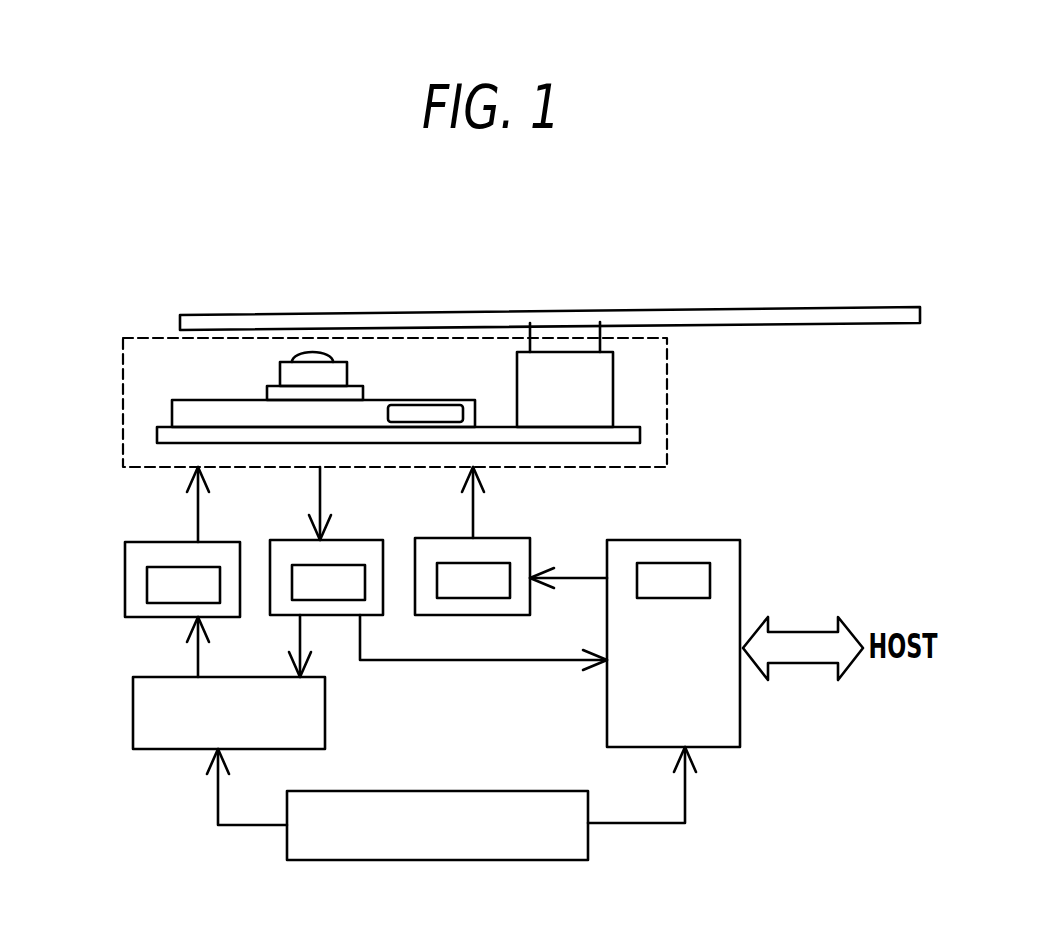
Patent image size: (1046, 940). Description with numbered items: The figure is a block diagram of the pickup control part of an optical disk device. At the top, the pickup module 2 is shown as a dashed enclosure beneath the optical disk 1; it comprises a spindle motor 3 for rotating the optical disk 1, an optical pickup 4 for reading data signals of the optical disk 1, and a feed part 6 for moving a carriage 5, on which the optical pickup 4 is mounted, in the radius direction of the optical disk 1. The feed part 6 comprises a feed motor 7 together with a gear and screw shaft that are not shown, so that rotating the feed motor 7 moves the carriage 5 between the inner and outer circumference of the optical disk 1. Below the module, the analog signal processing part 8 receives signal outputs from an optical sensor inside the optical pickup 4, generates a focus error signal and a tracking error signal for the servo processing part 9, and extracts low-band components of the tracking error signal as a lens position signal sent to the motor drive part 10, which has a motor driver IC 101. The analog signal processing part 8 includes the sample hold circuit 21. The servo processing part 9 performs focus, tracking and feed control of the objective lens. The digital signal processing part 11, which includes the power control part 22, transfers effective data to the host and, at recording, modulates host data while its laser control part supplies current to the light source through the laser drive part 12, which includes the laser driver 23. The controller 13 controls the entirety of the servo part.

The optical disk 1 is at (505, 310).
The pickup module 2 is at (152, 350).
The spindle motor 3 is at (602, 382).
The optical pickup 4 is at (313, 353).
The carriage 5 is at (288, 390).
The feed part 6 is at (182, 418).
The feed motor 7 is at (410, 413).
The analog signal processing part 8 is at (340, 603).
The servo processing part 9 is at (168, 750).
The motor drive part 10 is at (154, 545).
The motor driver IC 101 is at (148, 585).
The digital signal processing part 11 is at (711, 602).
The laser drive part 12 is at (506, 564).
The controller 13 is at (455, 788).
The sample hold circuit 21 is at (332, 600).
The power control part 22 is at (710, 578).
The laser driver 23 is at (510, 580).